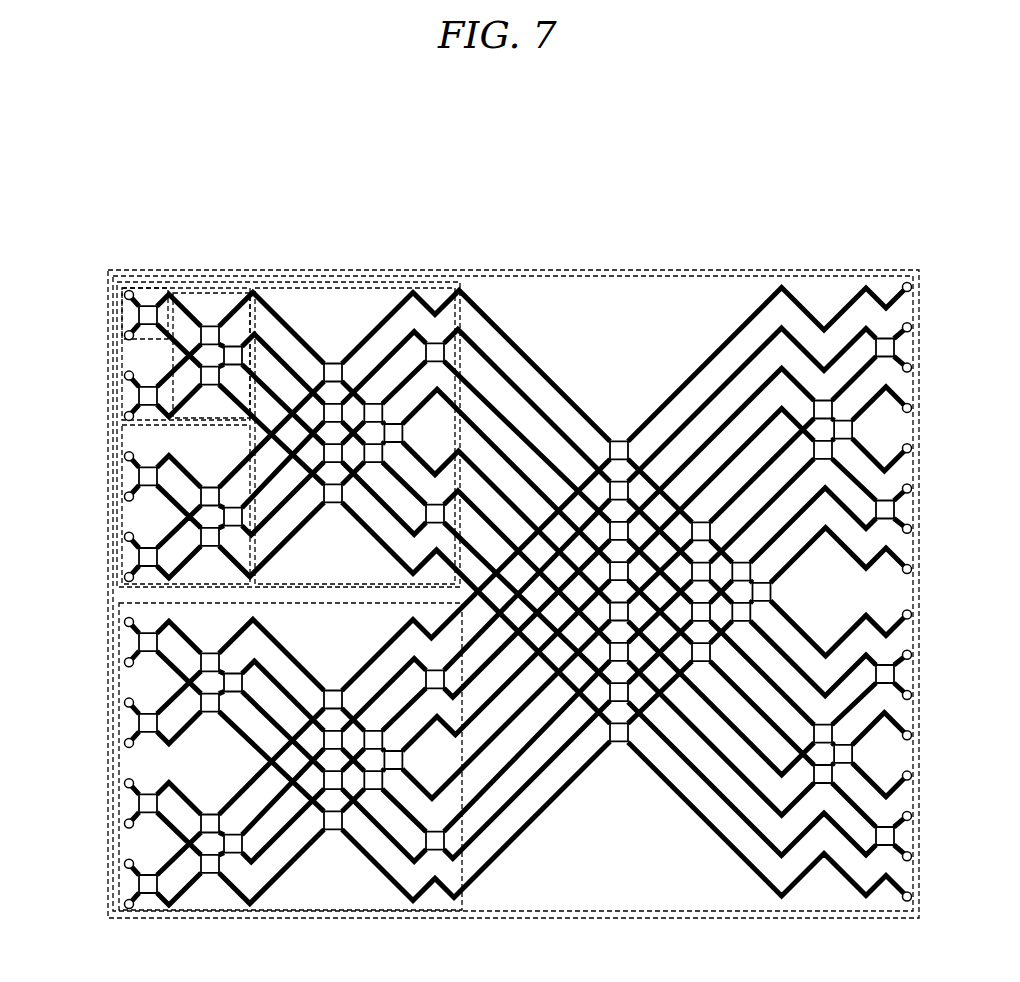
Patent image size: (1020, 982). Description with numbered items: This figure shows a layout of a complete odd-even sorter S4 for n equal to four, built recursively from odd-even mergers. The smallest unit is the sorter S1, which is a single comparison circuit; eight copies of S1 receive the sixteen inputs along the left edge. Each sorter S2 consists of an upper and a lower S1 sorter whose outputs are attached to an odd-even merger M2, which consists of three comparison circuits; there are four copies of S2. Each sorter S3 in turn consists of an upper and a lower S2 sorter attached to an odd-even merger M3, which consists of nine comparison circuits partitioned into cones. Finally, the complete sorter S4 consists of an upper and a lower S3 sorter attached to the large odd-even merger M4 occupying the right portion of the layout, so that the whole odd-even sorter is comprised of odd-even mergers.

The sorter S1 is at (152, 296).
The odd-even merger M2 is at (208, 300).
The sorter S2 is at (232, 288).
The odd-even merger M3 is at (330, 300).
The sorter S3 is at (384, 280).
The odd-even merger M4 is at (574, 310).
The odd-even sorter S4 is at (668, 272).